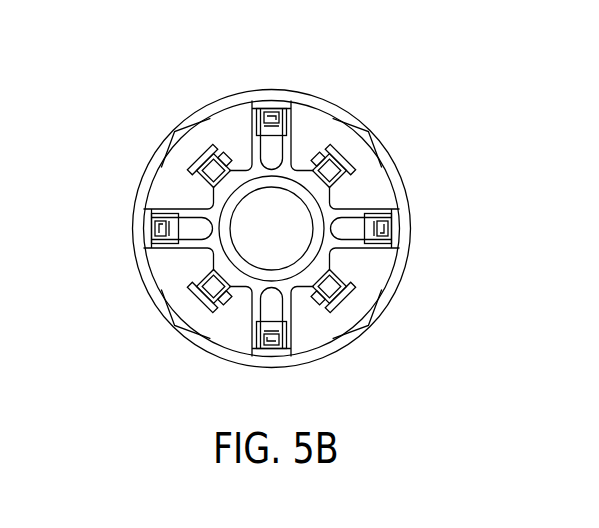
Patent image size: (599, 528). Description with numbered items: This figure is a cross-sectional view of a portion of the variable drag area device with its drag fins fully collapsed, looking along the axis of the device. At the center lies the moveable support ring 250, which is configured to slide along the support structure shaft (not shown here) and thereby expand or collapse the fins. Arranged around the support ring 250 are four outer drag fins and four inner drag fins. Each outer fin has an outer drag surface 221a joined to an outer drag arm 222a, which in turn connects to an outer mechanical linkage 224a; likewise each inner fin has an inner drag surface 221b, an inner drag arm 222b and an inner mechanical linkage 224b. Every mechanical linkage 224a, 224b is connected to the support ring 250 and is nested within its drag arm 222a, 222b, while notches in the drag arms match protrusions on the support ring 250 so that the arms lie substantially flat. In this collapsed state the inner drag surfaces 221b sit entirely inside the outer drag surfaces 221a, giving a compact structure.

The outer drag surface 221a is at (213, 100).
The inner drag surface 221b is at (344, 137).
The outer drag arm 222a is at (277, 108).
The inner drag arm 222b is at (366, 143).
The outer mechanical linkage 224a is at (270, 128).
The inner mechanical linkage 224b is at (346, 158).
The support ring 250 is at (295, 290).